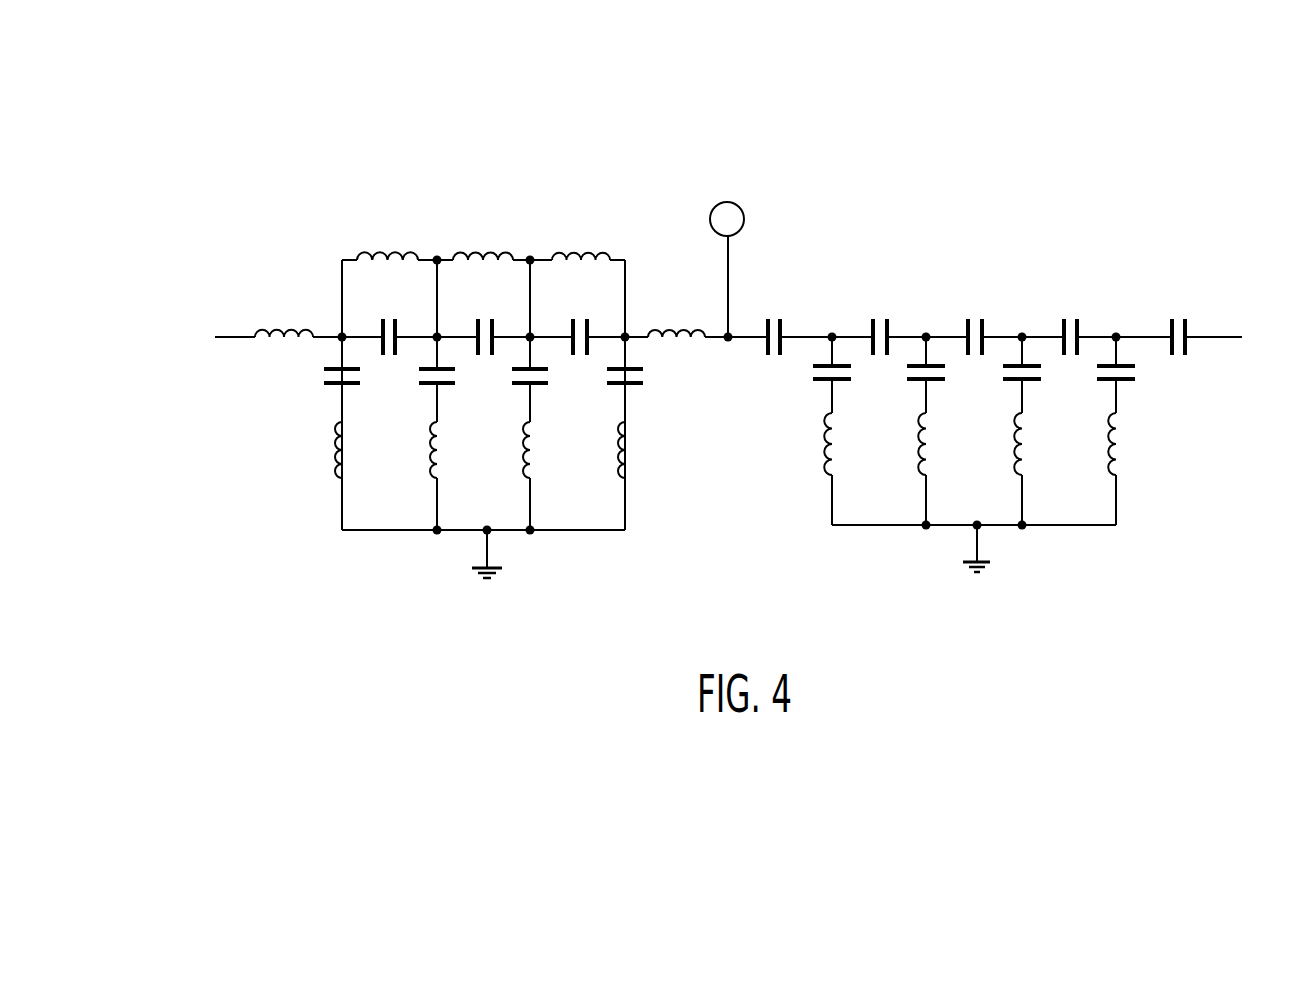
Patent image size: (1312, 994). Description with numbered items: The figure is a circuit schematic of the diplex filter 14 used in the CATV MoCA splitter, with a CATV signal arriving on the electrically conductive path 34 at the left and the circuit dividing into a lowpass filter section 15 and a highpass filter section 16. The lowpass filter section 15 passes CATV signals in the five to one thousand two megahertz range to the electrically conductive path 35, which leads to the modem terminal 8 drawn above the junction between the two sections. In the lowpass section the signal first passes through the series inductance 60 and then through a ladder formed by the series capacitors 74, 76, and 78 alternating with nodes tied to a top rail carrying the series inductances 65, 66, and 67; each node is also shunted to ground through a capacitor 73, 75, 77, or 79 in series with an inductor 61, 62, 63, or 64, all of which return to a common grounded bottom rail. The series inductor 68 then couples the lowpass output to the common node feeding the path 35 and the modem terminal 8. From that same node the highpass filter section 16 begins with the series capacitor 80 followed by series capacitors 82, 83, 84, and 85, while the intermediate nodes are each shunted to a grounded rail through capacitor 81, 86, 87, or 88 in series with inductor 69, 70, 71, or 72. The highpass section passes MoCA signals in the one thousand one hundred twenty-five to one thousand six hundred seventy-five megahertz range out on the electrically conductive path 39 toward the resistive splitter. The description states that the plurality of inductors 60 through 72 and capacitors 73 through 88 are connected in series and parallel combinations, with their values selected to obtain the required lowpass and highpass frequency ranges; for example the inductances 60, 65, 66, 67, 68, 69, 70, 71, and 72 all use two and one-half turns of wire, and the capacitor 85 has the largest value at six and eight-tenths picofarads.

The first diplex filter 14 is at (762, 61).
The modem terminal 8 is at (717, 202).
The electrically conductive path 34 is at (235, 332).
The electrically conductive path 35 is at (731, 284).
The electrically conductive path 39 is at (1218, 330).
The lowpass filter section 15 is at (571, 548).
The highpass filter section 16 is at (1065, 547).
The inductance 60 is at (287, 322).
The inductor 61 is at (331, 468).
The inductor 62 is at (428, 455).
The inductor 63 is at (521, 455).
The inductor 64 is at (616, 455).
The inductance 65 is at (383, 256).
The inductance 66 is at (478, 256).
The inductance 67 is at (580, 256).
The inductor 68 is at (668, 328).
The inductor 69 is at (823, 447).
The inductor 70 is at (918, 450).
The inductor 71 is at (1013, 452).
The inductor 72 is at (1125, 460).
The capacitor 73 is at (320, 384).
The capacitor 74 is at (396, 328).
The capacitor 75 is at (421, 385).
The capacitor 76 is at (492, 328).
The capacitor 77 is at (516, 385).
The capacitor 78 is at (588, 328).
The capacitor 79 is at (612, 386).
The capacitor 80 is at (763, 346).
The capacitor 81 is at (813, 382).
The capacitor 82 is at (878, 313).
The capacitor 83 is at (975, 313).
The capacitor 84 is at (1072, 313).
The capacitor 85 is at (1176, 313).
The capacitor 86 is at (945, 382).
The capacitor 87 is at (1041, 382).
The capacitor 88 is at (1137, 379).